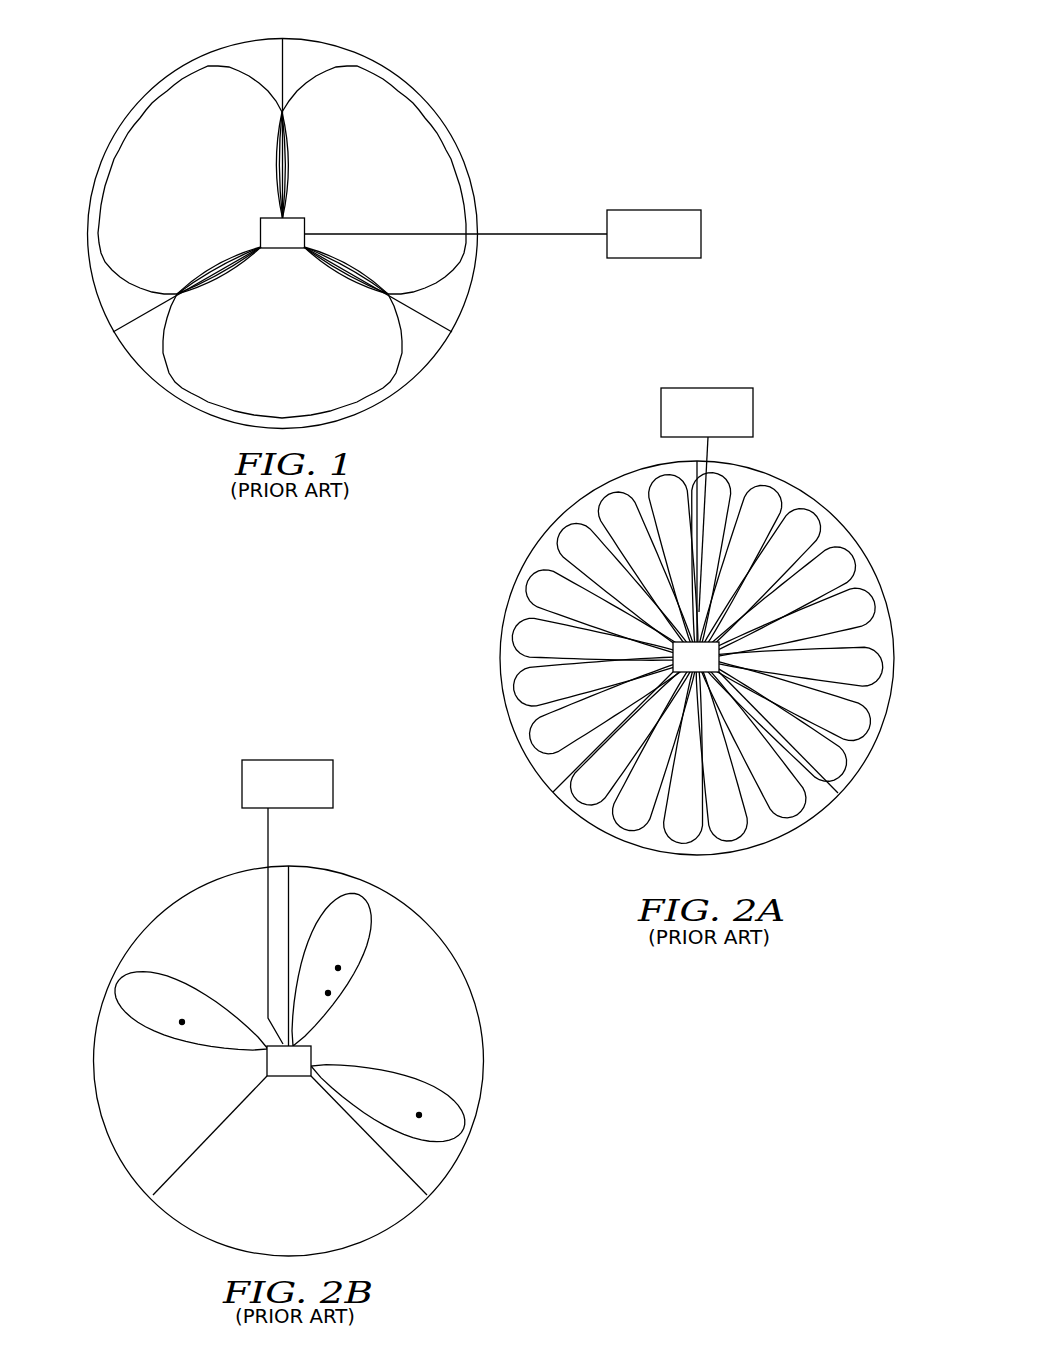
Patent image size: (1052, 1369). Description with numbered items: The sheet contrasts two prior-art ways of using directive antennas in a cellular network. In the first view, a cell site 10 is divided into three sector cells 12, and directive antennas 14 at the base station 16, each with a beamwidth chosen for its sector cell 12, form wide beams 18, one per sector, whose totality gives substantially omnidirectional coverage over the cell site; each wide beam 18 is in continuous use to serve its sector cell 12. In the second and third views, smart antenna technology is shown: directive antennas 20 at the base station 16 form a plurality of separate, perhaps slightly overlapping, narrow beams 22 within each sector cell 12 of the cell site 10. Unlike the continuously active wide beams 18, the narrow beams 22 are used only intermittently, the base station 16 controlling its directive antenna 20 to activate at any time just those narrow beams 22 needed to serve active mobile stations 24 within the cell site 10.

In FIG. 1, the cell site 10 is at (488, 130).
In FIG. 2A, the cell site 10 is at (808, 486).
In FIG. 2B, the cell site 10 is at (452, 1043).
In FIG. 1, the sector cell 12 is at (262, 63).
In FIG. 2A, the sector cell 12 is at (745, 478).
In FIG. 2B, the sector cell 12 is at (441, 963).
In FIG. 1, the directive antenna 14 is at (300, 217).
In FIG. 1, the base station 16 is at (690, 210).
In FIG. 2A, the base station 16 is at (740, 388).
In FIG. 2B, the base station 16 is at (318, 760).
In FIG. 1, the wide beam 18 is at (393, 83).
In FIG. 2A, the directive antenna 20 is at (722, 665).
In FIG. 2B, the directive antenna 20 is at (313, 1051).
In FIG. 2A, the narrow beam 22 is at (860, 582).
In FIG. 2B, the narrow beam 22 is at (371, 921).
In FIG. 2B, the mobile station 24 is at (340, 967).